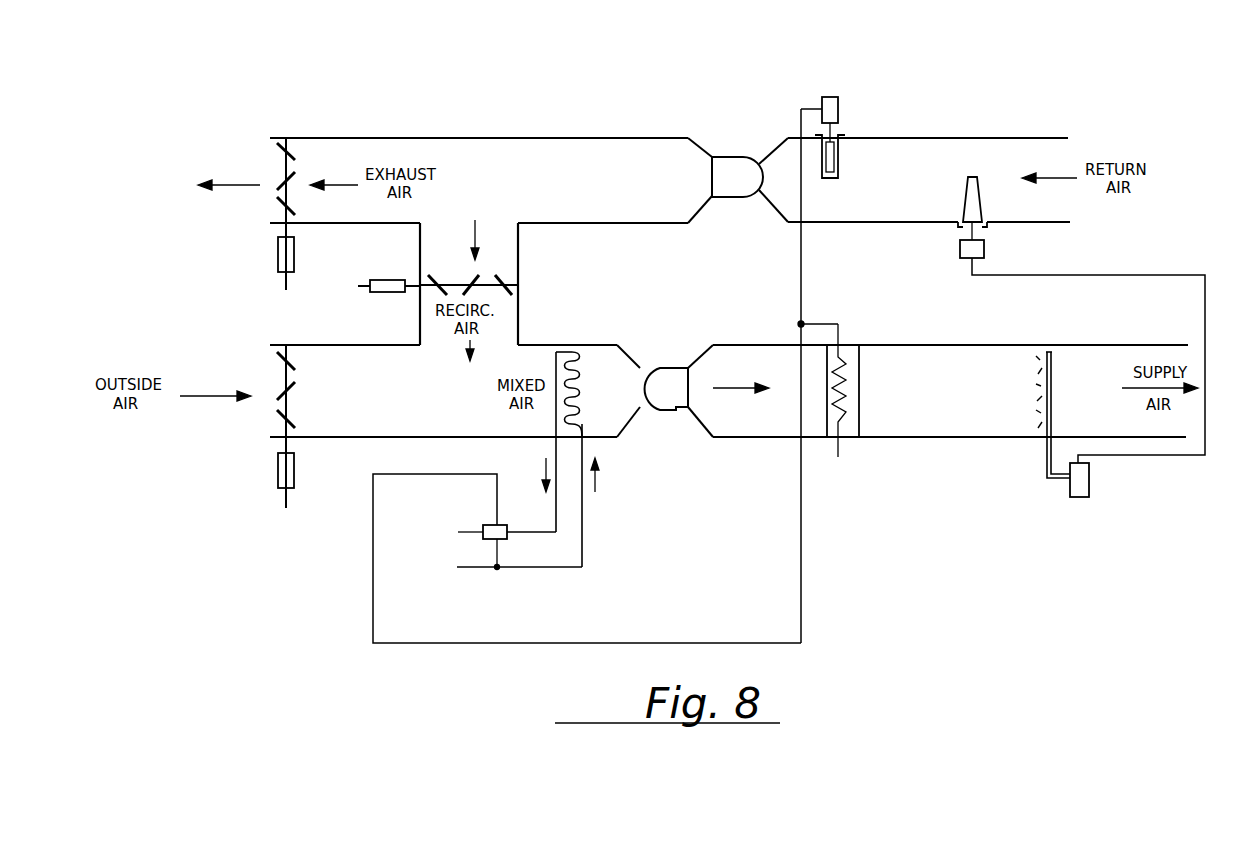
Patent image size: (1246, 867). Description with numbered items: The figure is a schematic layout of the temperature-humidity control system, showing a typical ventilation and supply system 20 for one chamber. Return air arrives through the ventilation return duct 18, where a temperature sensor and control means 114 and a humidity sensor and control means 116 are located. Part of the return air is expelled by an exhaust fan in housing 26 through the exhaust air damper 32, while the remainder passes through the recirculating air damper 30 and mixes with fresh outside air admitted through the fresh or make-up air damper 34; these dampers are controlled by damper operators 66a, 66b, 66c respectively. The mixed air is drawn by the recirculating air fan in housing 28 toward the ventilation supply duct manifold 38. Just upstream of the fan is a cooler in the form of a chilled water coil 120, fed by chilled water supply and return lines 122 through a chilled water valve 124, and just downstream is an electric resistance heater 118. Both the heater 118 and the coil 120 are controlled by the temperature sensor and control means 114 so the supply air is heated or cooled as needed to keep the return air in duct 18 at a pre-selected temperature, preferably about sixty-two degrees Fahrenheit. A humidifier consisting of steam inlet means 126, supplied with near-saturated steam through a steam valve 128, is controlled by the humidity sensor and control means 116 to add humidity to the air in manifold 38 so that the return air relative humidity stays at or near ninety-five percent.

The ventilation and supply system 20 is at (512, 100).
The ventilation return duct 18 is at (975, 140).
The exhaust fan housing 26 is at (740, 168).
The recirculating air fan housing 28 is at (665, 373).
The recirculating air damper 30 is at (506, 278).
The exhaust air damper 32 is at (295, 150).
The fresh or make-up air damper 34 is at (295, 385).
The ventilation supply duct manifold 38 is at (1088, 344).
The damper operator 66a is at (278, 263).
The damper operator 66b is at (390, 280).
The damper operator 66c is at (278, 470).
The temperature sensor and control means 114 is at (840, 158).
The humidity sensor and control means 116 is at (968, 200).
The electric resistance heater 118 is at (848, 388).
The chilled water coil 120 is at (580, 402).
The chilled water supply and return lines 122 is at (582, 525).
The chilled water valve 124 is at (487, 533).
The steam inlet means 126 is at (1052, 398).
The steam valve 128 is at (1070, 485).